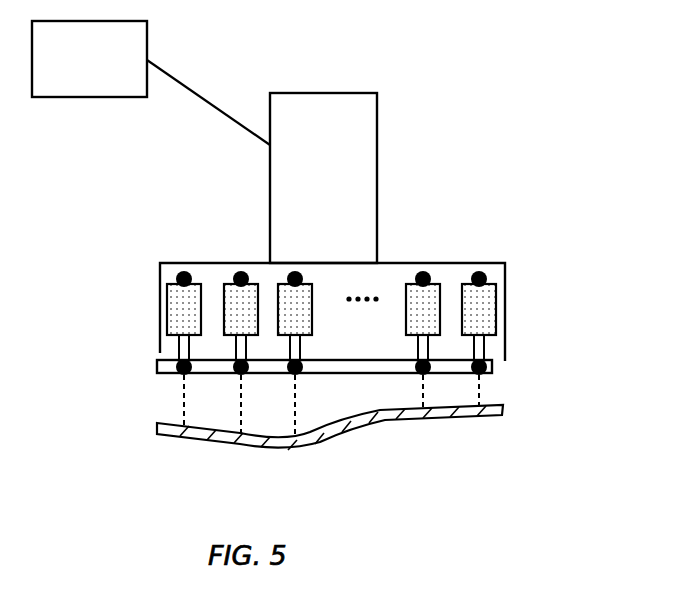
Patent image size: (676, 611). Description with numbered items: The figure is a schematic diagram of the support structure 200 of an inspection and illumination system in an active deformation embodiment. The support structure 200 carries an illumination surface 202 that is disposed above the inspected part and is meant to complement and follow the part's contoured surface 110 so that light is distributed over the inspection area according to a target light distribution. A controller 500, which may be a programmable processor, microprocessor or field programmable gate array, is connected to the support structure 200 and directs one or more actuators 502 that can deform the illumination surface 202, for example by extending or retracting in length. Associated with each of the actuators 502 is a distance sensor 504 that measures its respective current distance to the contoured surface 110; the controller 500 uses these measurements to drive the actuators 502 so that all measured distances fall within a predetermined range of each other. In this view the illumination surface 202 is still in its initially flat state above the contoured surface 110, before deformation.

The controller 500 is at (147, 42).
The support structure 200 is at (505, 313).
The actuators 502 is at (473, 243).
The illumination surface 202 is at (492, 366).
The distance sensors 504 is at (180, 376).
The contoured surface 110 is at (503, 410).